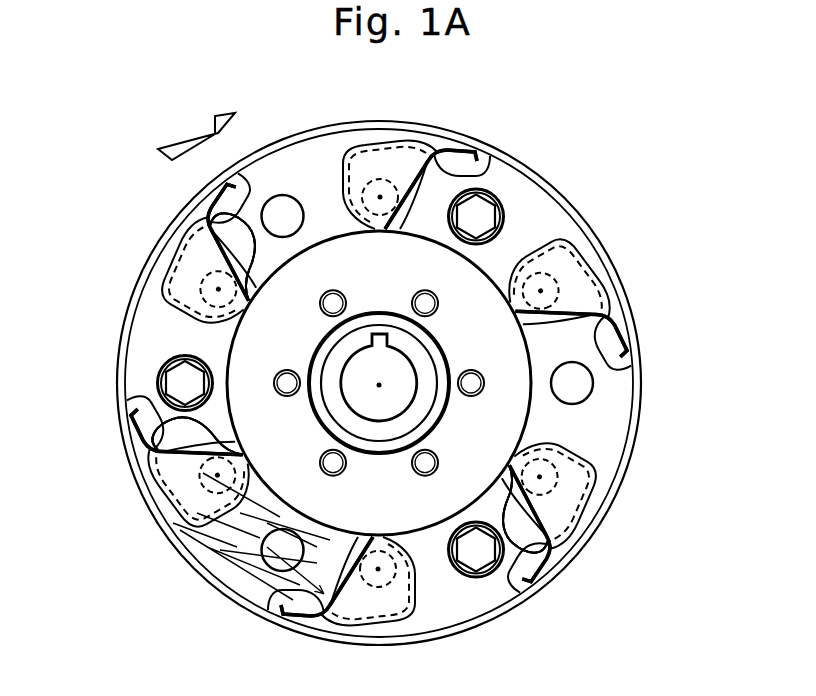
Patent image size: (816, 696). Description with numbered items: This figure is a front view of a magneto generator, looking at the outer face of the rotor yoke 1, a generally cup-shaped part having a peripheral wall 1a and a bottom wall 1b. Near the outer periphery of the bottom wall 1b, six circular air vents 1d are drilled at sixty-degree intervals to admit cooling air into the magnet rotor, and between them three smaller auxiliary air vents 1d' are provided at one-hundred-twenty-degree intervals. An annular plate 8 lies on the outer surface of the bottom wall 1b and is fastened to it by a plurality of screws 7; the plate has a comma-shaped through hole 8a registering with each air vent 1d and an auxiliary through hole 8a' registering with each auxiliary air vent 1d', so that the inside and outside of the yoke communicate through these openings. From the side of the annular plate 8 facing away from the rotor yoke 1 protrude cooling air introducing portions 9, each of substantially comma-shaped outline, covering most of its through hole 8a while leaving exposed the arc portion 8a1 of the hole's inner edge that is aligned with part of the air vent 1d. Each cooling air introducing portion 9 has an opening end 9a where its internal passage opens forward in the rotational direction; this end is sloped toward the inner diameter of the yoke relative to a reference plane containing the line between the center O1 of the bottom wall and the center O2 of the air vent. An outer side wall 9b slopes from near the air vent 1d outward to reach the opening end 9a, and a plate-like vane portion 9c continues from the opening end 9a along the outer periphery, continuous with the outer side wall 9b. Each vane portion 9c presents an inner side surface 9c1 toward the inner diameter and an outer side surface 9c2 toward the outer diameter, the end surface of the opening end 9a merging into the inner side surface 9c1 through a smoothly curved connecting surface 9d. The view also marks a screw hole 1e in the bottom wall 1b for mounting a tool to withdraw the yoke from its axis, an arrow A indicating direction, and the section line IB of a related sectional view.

The rotor yoke 1 is at (533, 190).
The peripheral wall 1a is at (600, 497).
The bottom wall 1b is at (545, 415).
The air vent 1d is at (379, 383).
The auxiliary air vent 1d' is at (385, 336).
The screw hole 1e is at (340, 468).
The screw 7 is at (490, 195).
The annular plate 8 is at (523, 213).
The through hole 8a is at (362, 412).
The auxiliary through hole 8a' is at (359, 322).
The arc portion 8a1 is at (238, 188).
The cooling air introducing portion 9 is at (333, 187).
The opening end 9a is at (415, 178).
The outer side wall 9b is at (443, 140).
The vane portion 9c is at (473, 152).
The inner side surface 9c1 is at (472, 157).
The outer side surface 9c2 is at (460, 138).
The connecting surface 9d is at (483, 172).
The center of the bottom wall O1 is at (379, 385).
The center of the air vent O2 is at (380, 197).
The air flow direction A is at (202, 132).
The section line IB is at (381, 143).